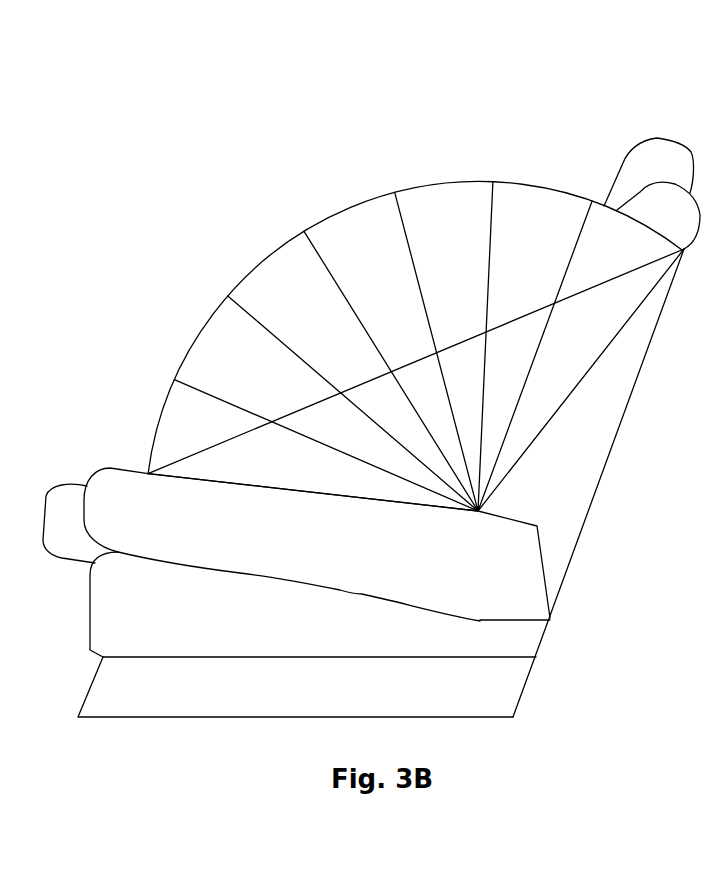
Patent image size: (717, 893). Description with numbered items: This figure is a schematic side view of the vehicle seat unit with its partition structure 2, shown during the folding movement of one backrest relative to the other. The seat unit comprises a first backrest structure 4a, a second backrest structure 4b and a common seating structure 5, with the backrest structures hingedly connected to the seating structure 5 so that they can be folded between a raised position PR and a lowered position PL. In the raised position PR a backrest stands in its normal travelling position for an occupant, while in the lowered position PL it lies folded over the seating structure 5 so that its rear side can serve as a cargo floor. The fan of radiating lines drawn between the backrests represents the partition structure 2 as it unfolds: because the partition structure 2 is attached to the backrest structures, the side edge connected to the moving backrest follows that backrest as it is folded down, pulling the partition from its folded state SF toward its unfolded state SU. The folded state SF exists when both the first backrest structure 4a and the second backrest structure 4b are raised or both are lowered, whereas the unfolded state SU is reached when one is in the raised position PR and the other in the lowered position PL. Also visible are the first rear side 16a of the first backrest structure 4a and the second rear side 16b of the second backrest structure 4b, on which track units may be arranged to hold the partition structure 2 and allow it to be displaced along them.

The partition structure 2 is at (347, 207).
The first backrest structure 4a is at (133, 517).
The second backrest structure 4b is at (663, 205).
The common seating structure 5 is at (160, 617).
The first rear side 16a is at (507, 518).
The second rear side 16b is at (606, 474).
The raised position PR is at (610, 109).
The lowered position PL is at (96, 446).
The unfolded state SU is at (394, 143).
The folded state SF is at (9, 166).